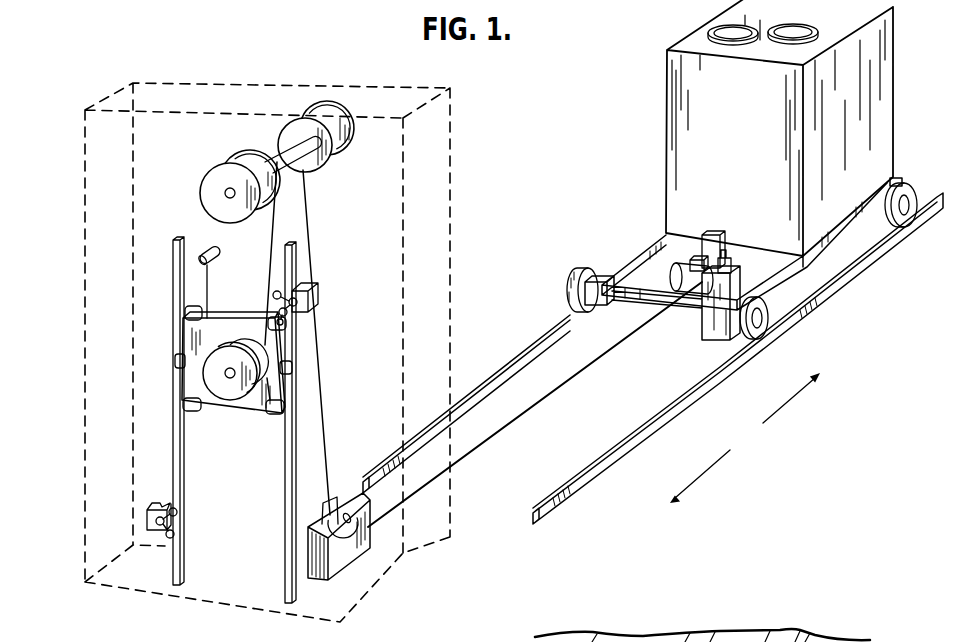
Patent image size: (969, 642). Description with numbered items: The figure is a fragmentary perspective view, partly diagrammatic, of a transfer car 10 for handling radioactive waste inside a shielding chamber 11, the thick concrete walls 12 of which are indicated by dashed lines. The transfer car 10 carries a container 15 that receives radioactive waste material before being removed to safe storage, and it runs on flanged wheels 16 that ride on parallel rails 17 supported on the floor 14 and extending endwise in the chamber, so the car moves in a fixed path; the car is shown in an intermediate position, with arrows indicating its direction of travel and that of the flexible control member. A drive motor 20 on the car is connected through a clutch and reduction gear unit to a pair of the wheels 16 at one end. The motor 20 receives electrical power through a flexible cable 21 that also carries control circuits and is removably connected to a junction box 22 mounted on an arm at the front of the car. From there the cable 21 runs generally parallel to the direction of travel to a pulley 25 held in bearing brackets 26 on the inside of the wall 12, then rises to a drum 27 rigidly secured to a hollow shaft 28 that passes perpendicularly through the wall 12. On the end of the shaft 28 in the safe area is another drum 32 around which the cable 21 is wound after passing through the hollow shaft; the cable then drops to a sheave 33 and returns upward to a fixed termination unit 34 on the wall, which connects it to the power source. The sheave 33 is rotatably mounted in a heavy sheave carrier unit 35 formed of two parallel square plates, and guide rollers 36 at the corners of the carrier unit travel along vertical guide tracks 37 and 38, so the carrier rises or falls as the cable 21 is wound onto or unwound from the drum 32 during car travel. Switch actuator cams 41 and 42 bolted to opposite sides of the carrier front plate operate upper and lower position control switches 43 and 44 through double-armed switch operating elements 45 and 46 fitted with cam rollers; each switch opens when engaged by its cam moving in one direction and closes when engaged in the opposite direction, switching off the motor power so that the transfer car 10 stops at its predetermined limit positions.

The transfer car 10 is at (592, 253).
The shielding chamber 11 is at (600, 637).
The concrete walls 12 is at (455, 134).
The floor 14 is at (496, 492).
The container 15 is at (779, 128).
The flanged wheels 16 is at (572, 280).
The parallel rails 17 is at (522, 353).
The drive motor 20 is at (677, 268).
The flexible cable 21 is at (243, 237).
The junction box 22 is at (733, 272).
The pulley 25 is at (340, 505).
The bearing brackets 26 is at (346, 556).
The drum 27 is at (333, 162).
The hollow shaft 28 is at (290, 150).
The drum 32 is at (223, 173).
The sheave 33 is at (232, 360).
The fixed termination unit 34 is at (216, 260).
The sheave carrier unit 35 is at (245, 410).
The guide rollers 36 is at (185, 318).
The vertical guide track 37 is at (172, 273).
The vertical guide track 38 is at (285, 532).
The switch actuator cam 41 is at (178, 364).
The switch actuator cam 42 is at (284, 378).
The upper position control switch 43 is at (147, 517).
The lower position control switch 44 is at (318, 292).
The switch operating element 45 is at (158, 523).
The switch operating element 46 is at (295, 316).